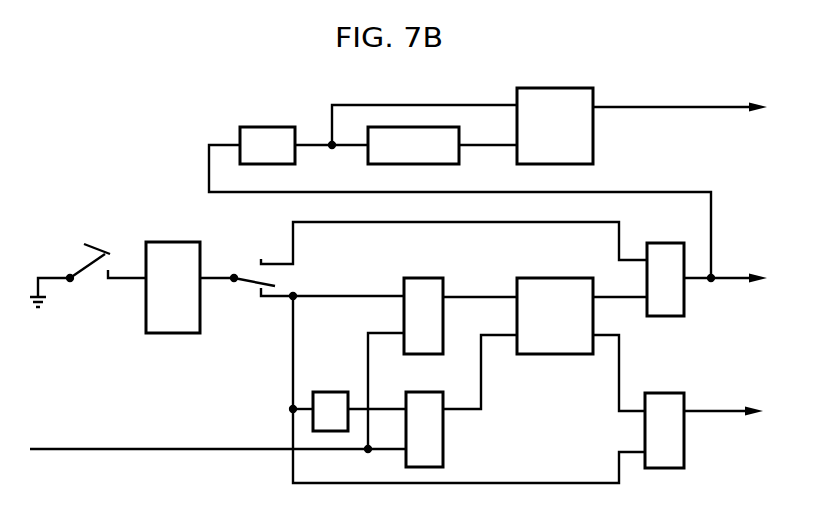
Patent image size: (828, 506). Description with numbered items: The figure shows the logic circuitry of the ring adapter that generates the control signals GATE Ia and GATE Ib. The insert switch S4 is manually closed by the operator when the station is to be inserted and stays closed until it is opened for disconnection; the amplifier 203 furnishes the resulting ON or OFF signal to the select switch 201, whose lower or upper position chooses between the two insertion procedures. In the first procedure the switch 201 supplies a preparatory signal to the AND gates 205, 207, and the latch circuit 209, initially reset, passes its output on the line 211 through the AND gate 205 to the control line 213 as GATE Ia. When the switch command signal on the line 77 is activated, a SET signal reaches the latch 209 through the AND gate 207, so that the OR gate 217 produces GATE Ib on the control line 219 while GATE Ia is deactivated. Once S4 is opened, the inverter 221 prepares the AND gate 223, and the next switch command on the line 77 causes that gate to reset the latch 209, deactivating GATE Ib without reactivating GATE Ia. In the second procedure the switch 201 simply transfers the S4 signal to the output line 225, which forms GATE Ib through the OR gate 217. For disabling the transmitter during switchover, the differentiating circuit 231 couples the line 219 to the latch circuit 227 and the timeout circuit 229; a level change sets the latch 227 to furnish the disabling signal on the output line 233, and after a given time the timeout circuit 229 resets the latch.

The switch command signal line 77 is at (240, 447).
The select switch 201 is at (250, 286).
The amplifier 203 is at (158, 333).
The AND gate 205 is at (678, 468).
The AND gate 207 is at (420, 354).
The latch circuit 209 is at (550, 354).
The output line 211 is at (619, 375).
The control line 213 is at (710, 406).
The OR gate 217 is at (665, 316).
The control line 219 is at (712, 282).
The inverter 221 is at (321, 392).
The AND gate 223 is at (443, 445).
The output line 225 is at (500, 223).
The latch circuit 227 is at (593, 152).
The timeout circuit 229 is at (449, 164).
The differentiating circuit 231 is at (249, 127).
The output line 233 is at (683, 108).
The insert switch S4 is at (108, 274).